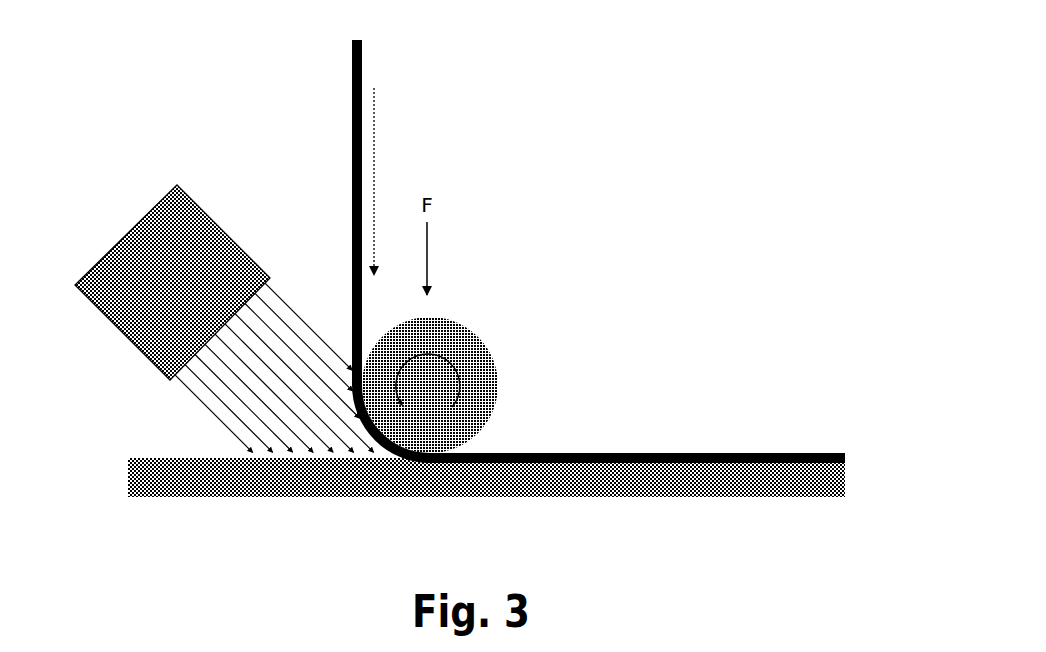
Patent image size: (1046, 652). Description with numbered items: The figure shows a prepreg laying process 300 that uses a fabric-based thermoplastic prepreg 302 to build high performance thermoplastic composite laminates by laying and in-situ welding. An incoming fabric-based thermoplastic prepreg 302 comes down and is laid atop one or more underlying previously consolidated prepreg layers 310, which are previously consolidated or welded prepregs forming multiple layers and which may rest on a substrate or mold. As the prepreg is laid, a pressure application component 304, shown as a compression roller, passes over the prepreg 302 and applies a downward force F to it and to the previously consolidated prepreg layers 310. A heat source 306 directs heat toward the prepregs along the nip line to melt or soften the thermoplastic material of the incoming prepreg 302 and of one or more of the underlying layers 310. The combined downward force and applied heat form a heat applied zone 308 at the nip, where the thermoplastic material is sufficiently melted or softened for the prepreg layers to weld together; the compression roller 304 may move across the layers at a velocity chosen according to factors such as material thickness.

The prepreg laying process 300 is at (598, 265).
The fabric-based thermoplastic prepreg 302 is at (362, 72).
The pressure application component 304 is at (460, 323).
The heat source 306 is at (138, 325).
The heat applied zone 308 is at (466, 463).
The previously consolidated prepreg layers 310 is at (845, 473).